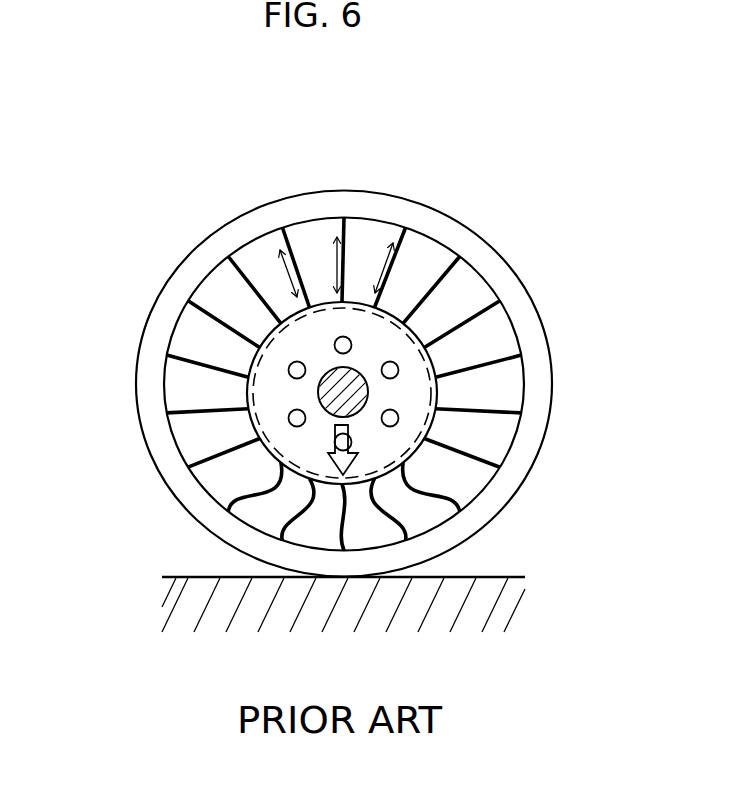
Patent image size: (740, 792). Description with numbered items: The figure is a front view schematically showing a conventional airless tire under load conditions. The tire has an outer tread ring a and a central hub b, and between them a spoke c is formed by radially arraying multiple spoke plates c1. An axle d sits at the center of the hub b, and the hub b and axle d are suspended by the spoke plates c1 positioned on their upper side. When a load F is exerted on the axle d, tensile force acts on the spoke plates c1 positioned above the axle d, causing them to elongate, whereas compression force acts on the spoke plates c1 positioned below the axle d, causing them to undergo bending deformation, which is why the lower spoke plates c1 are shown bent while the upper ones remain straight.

The tread ring a is at (518, 303).
The hub b is at (440, 394).
The spoke c is at (255, 268).
The spoke plate c1 is at (346, 237).
The axle d is at (330, 412).
The load F is at (347, 433).